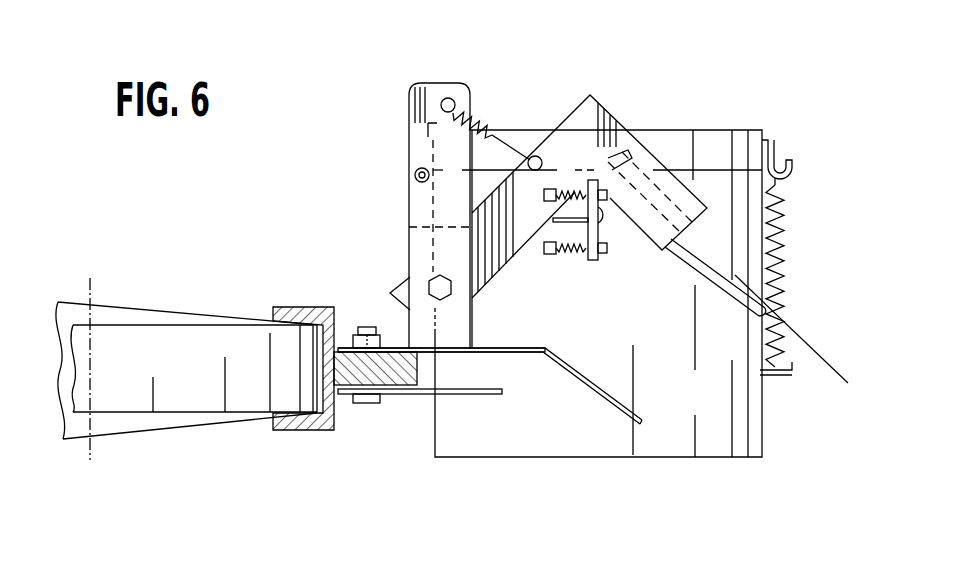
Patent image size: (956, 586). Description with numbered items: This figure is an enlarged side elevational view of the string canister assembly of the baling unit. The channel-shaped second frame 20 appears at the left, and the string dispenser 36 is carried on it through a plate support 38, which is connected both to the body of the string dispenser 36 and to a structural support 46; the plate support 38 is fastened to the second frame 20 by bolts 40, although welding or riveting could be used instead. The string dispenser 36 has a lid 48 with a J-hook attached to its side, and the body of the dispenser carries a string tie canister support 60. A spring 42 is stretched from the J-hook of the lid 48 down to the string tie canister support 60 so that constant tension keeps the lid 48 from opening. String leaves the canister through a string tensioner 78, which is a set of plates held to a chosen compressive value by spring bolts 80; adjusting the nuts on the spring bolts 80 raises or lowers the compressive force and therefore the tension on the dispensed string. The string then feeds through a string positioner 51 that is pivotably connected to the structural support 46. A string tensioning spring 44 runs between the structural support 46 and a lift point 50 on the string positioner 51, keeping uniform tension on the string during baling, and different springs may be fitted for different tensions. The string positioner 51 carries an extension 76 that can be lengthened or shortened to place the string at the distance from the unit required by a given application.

The second frame 20 is at (290, 305).
The string dispenser 36 is at (757, 425).
The plate support 38 is at (400, 347).
The bolts 40 is at (363, 326).
The spring 42 is at (778, 285).
The string tensioning spring 44 is at (487, 120).
The structural support 46 is at (412, 102).
The lid 48 is at (757, 140).
The lift point 50 is at (532, 156).
The string positioner 51 is at (565, 127).
The string tie canister support 60 is at (790, 372).
The extension 76 is at (776, 312).
The string tensioner 78 is at (595, 262).
The spring bolts 80 is at (552, 255).